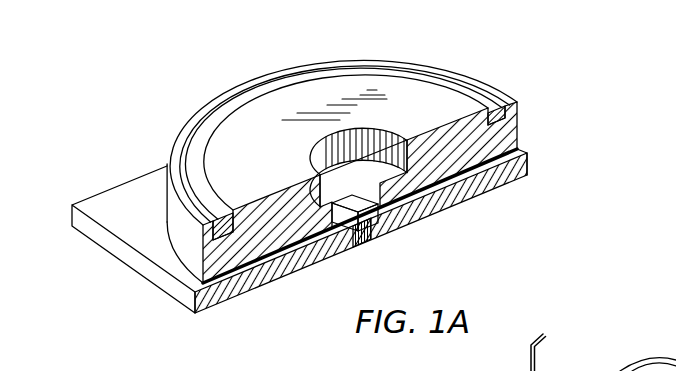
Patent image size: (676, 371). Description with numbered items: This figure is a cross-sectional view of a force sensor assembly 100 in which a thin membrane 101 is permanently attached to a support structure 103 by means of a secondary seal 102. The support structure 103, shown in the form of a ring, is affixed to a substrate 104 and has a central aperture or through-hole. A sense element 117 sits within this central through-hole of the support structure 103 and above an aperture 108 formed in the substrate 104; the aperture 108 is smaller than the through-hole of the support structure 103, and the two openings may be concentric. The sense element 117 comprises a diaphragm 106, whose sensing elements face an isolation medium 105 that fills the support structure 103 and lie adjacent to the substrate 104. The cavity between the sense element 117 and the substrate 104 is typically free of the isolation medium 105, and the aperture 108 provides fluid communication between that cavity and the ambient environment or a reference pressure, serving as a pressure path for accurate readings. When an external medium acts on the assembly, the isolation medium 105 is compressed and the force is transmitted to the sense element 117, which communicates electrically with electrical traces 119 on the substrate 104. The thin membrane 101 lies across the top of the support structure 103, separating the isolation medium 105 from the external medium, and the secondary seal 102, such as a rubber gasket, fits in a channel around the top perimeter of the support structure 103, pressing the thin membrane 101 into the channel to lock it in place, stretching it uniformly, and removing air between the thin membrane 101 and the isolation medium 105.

The force sensor assembly 100 is at (140, 76).
The thin membrane 101 is at (418, 90).
The secondary seal 102 is at (462, 87).
The support structure 103 is at (508, 133).
The substrate 104 is at (110, 195).
The isolation medium 105 is at (333, 181).
The diaphragm 106 is at (366, 222).
The aperture 108 is at (356, 232).
The sense element 117 is at (410, 225).
The electrical traces 119 is at (530, 168).